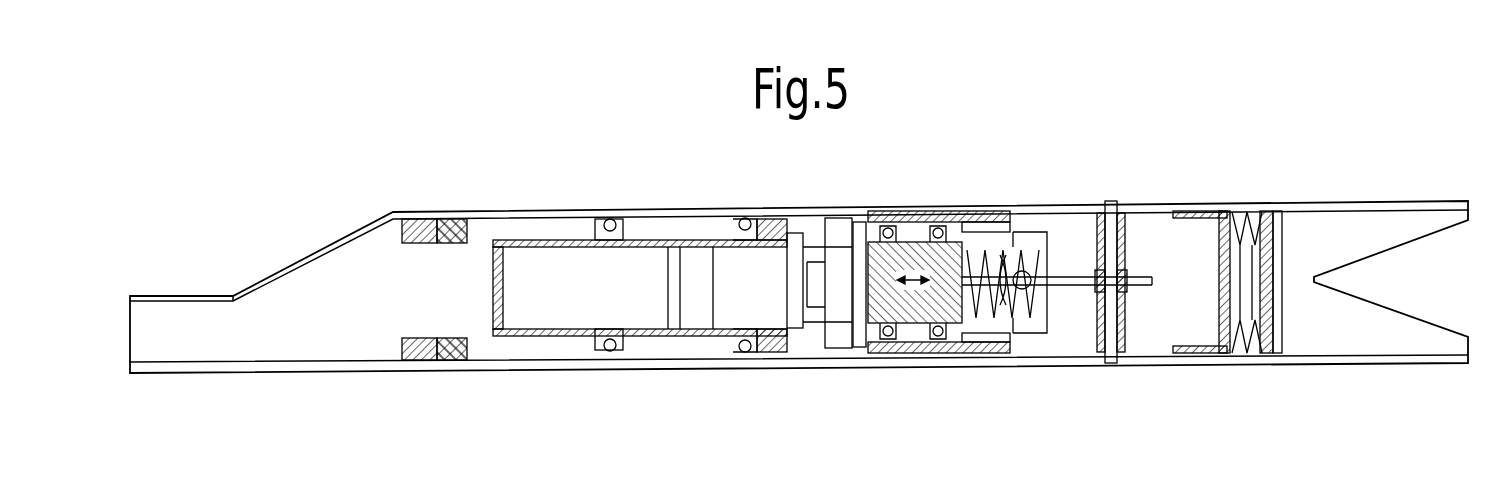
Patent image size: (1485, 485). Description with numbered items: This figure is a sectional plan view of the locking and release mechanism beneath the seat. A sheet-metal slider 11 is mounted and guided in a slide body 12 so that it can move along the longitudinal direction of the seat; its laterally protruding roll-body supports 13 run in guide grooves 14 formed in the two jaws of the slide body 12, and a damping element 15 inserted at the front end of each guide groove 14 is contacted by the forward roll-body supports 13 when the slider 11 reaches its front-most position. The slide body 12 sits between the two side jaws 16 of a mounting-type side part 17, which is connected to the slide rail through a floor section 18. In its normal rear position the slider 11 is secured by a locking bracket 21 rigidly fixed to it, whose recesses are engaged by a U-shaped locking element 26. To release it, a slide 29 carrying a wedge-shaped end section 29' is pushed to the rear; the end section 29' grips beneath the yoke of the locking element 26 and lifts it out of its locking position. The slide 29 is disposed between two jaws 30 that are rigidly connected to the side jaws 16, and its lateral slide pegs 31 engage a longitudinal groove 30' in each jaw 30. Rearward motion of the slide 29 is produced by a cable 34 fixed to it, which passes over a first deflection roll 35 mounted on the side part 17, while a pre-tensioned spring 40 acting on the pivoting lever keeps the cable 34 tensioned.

The slider 11 is at (553, 332).
The slide body 12 is at (412, 222).
The roll-body supports 13 is at (723, 225).
The guide groove 14 is at (545, 230).
The damping element 15 is at (455, 222).
The side jaws 16 is at (975, 208).
The mounting-type side part 17 is at (222, 374).
The floor section 18 is at (320, 323).
The locking bracket 21 is at (803, 330).
The locking element 26 is at (861, 222).
The slide 29 is at (915, 351).
The wedge-shaped end section 29' is at (840, 339).
The jaws 30 is at (1063, 280).
The longitudinal groove 30' is at (990, 280).
The slide pegs 31 is at (940, 228).
The cable 34 is at (1130, 272).
The first deflection roll 35 is at (1167, 203).
The pre-tensioned spring 40 is at (1245, 207).